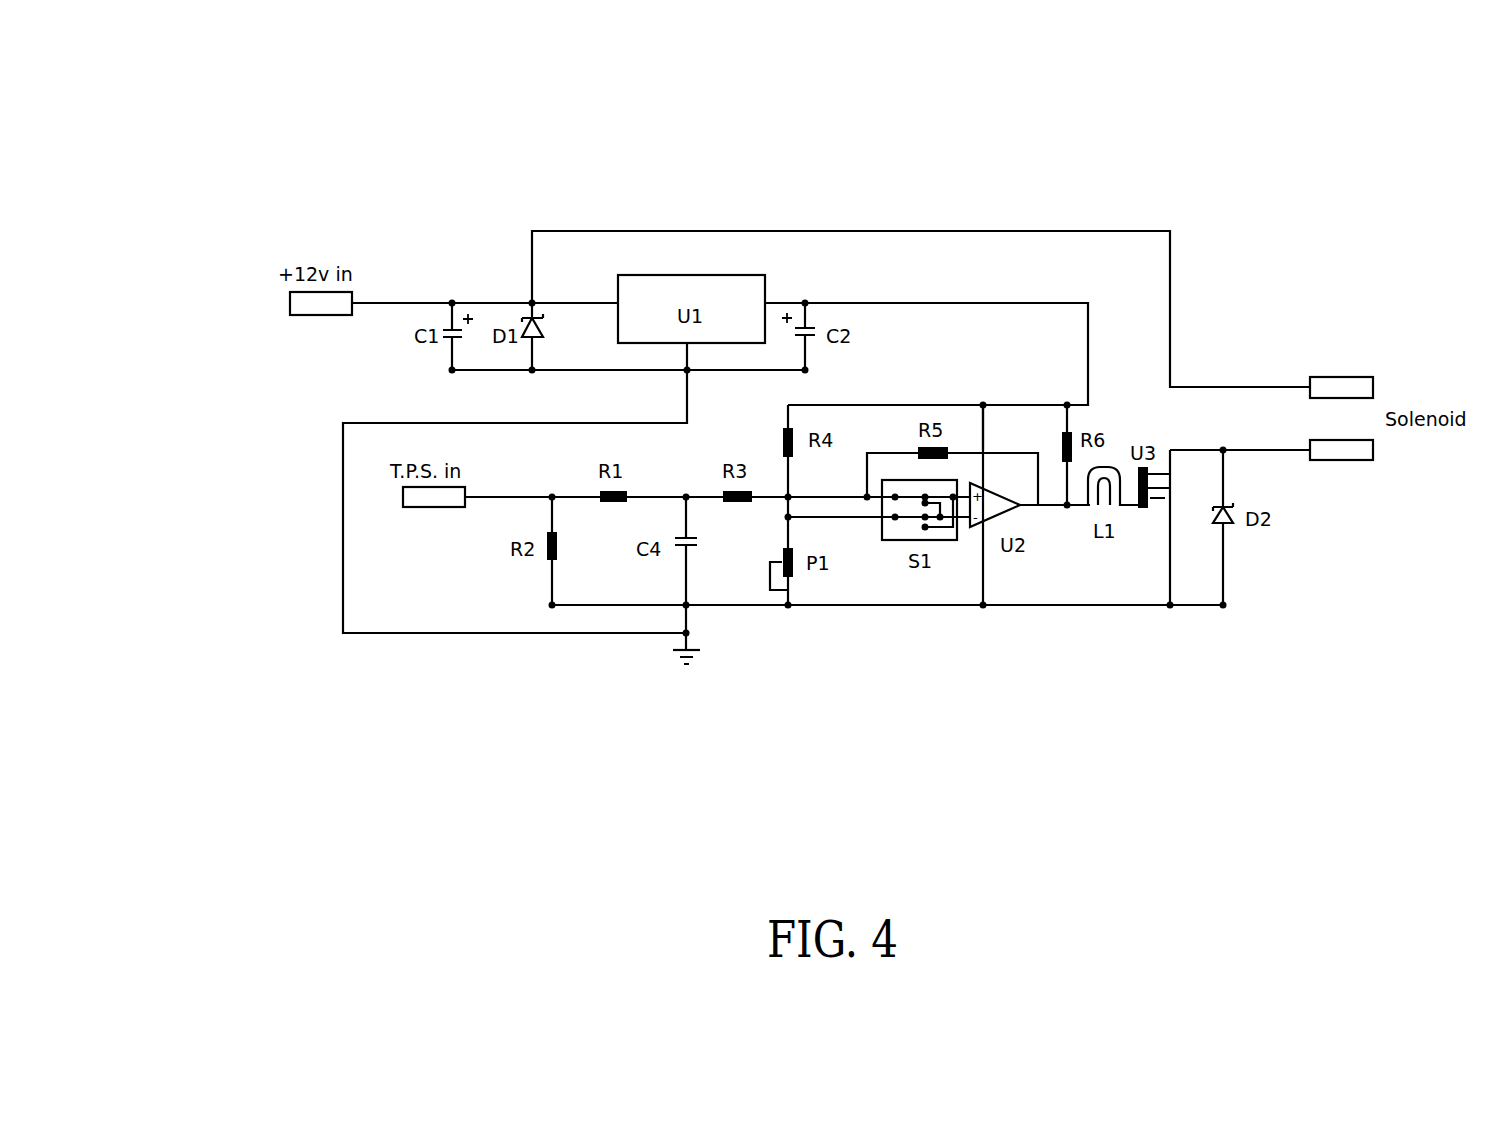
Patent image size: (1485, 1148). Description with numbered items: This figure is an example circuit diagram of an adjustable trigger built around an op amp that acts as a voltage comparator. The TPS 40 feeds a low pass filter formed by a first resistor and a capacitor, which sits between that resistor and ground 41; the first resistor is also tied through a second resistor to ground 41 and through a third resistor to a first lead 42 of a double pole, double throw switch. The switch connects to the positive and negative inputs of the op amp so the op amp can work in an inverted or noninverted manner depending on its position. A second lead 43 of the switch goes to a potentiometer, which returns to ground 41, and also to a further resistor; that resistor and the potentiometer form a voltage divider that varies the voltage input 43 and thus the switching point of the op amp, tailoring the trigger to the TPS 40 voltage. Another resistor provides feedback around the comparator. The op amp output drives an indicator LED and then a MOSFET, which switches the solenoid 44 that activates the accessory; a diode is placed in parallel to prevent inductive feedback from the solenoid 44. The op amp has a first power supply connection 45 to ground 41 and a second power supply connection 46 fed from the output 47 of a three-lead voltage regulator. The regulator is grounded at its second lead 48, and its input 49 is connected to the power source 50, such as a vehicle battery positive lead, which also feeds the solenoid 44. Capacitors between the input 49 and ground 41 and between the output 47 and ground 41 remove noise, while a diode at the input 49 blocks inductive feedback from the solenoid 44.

The TPS 40 is at (438, 507).
The ground 41 is at (705, 657).
The first lead 42 is at (837, 517).
The second lead 43 is at (850, 497).
The solenoid 44 is at (1405, 435).
The first power supply connection 45 is at (987, 570).
The second power supply connection 46 is at (987, 433).
The output 47 is at (775, 303).
The second lead 48 is at (687, 352).
The input 49 is at (590, 303).
The power source 50 is at (290, 304).